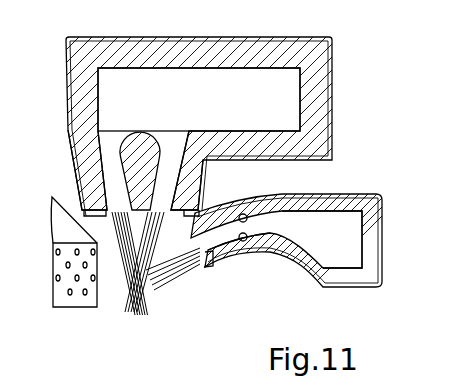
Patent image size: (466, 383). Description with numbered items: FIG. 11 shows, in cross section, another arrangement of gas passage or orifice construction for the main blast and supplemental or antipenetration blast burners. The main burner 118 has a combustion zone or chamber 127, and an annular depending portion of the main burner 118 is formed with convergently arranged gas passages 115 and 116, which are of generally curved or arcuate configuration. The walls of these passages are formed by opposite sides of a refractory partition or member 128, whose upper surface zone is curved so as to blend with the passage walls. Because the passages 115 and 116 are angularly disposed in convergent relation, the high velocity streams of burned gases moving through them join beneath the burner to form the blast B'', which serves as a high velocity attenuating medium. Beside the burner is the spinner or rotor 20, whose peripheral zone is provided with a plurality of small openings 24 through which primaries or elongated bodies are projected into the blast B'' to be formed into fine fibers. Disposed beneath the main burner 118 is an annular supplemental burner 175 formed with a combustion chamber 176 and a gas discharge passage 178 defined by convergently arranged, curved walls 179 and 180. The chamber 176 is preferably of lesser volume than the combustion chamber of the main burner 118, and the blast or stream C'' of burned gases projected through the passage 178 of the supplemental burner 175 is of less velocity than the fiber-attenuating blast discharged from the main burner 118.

The main burner 118 is at (266, 27).
The combustion zone or chamber 127 is at (272, 106).
The partition or member 128 is at (153, 131).
The gas passage or orifice 115 is at (113, 181).
The annular gas discharge passage 116 is at (166, 185).
The supplemental annular burner 175 is at (352, 297).
The combustion chamber 176 is at (353, 242).
The curved wall 179 is at (246, 214).
The curved wall 180 is at (241, 242).
The gas discharge passage 178 is at (216, 244).
The spinner or rotor 20 is at (60, 308).
The small openings 24 is at (57, 278).
The blast B'' is at (119, 272).
The blast or stream of burned gases C'' is at (178, 283).